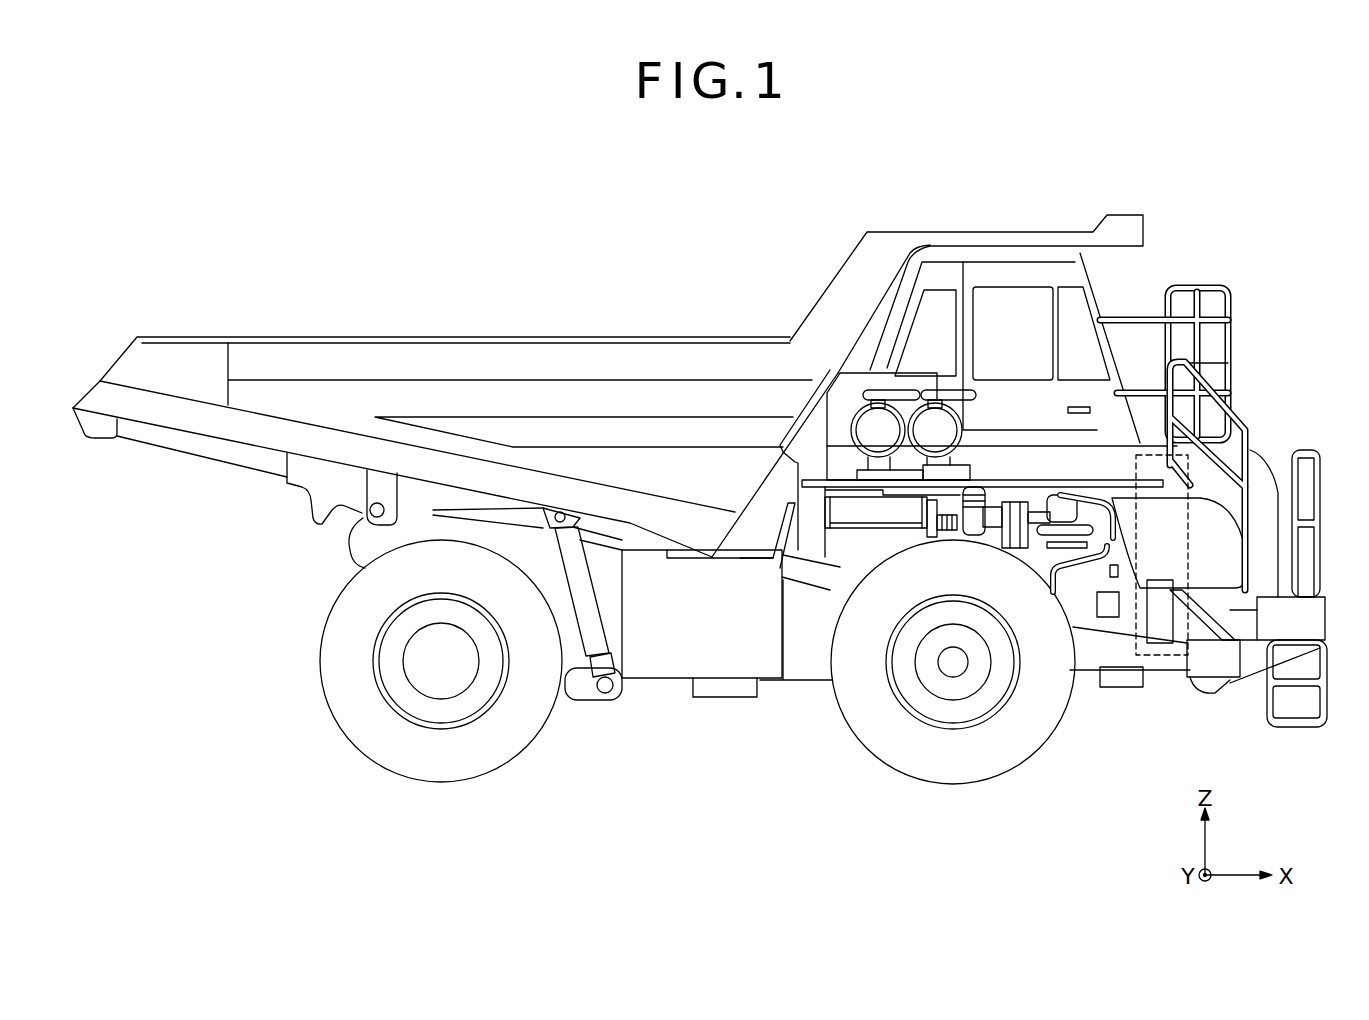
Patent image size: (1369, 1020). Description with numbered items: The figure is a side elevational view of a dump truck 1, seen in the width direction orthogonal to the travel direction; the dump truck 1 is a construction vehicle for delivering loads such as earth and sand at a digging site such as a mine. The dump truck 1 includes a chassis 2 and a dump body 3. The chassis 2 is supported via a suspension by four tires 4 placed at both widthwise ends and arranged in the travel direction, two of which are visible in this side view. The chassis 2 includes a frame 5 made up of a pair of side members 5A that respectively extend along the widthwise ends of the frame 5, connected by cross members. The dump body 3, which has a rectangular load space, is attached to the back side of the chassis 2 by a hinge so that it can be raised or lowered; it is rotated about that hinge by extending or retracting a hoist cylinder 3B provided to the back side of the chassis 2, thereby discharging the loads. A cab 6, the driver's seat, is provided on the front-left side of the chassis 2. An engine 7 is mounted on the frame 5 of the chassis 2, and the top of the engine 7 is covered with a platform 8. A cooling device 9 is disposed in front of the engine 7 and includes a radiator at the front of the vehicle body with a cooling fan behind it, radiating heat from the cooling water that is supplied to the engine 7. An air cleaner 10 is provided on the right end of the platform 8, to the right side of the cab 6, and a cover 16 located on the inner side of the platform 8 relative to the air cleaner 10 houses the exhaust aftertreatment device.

The dump truck 1 is at (822, 192).
The chassis 2 is at (1167, 660).
The dump body 3 is at (505, 355).
The hoist cylinder 3B is at (597, 627).
The tires 4 is at (508, 738).
The frame 5 is at (1112, 662).
The side members 5A is at (807, 617).
The cab 6 is at (1088, 312).
The engine 7 is at (1043, 583).
The platform 8 is at (1098, 442).
The cooling device 9 is at (1195, 478).
The air cleaner 10 is at (945, 423).
The cover 16 is at (857, 367).